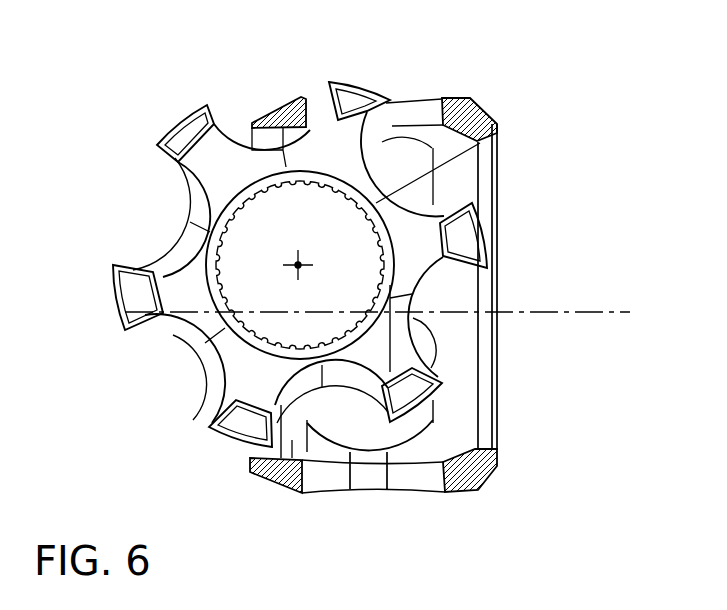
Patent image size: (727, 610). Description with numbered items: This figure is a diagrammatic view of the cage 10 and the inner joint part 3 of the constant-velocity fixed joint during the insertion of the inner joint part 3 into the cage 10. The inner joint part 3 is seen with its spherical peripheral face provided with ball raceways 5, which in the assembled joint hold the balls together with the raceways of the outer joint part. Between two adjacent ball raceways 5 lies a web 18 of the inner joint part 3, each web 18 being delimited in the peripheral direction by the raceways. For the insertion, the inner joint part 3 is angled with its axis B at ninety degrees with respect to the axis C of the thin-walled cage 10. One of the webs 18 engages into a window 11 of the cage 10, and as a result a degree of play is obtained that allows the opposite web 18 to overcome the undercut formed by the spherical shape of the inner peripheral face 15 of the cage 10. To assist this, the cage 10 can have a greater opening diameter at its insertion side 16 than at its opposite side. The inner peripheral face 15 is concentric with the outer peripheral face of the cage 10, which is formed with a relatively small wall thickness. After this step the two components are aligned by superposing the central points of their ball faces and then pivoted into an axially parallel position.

The inner joint part 3 is at (345, 225).
The ball raceways 5 is at (325, 128).
The web 18 is at (343, 150).
The window 11 is at (441, 114).
The cage 10 is at (463, 472).
The insertion side 16 is at (257, 453).
The inner peripheral face 15 is at (302, 433).
The axis of the inner joint part B is at (302, 261).
The axis of the cage C is at (556, 312).